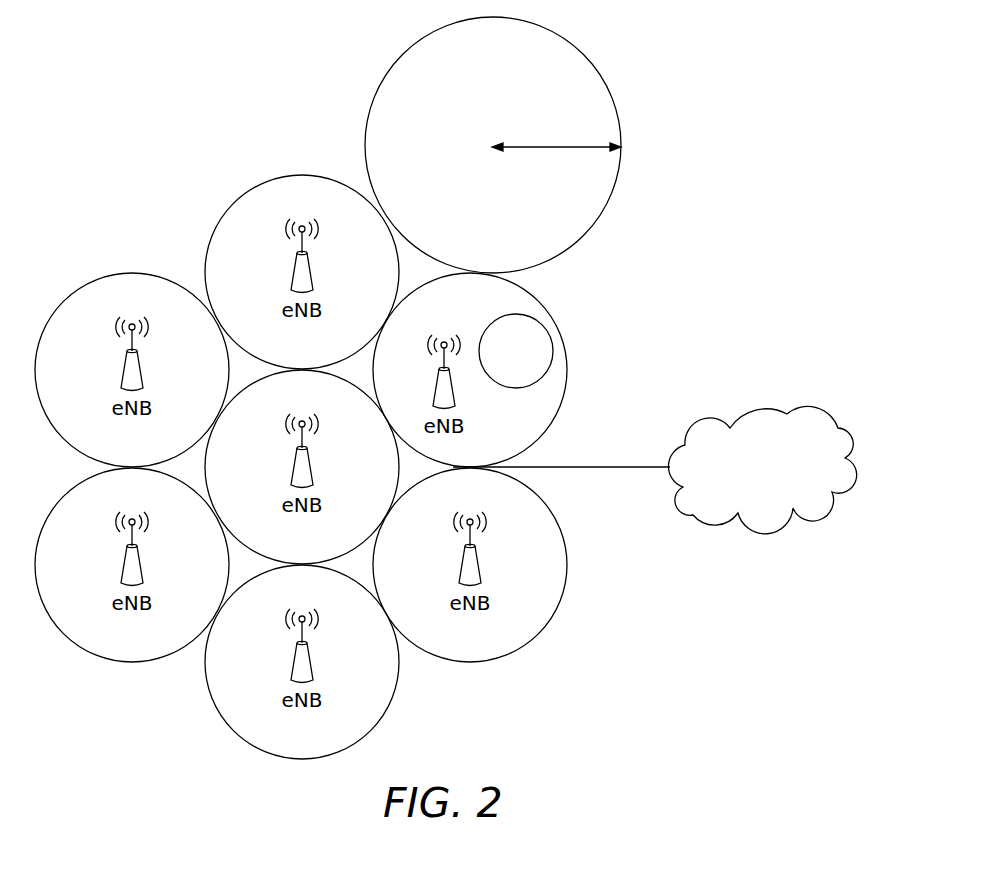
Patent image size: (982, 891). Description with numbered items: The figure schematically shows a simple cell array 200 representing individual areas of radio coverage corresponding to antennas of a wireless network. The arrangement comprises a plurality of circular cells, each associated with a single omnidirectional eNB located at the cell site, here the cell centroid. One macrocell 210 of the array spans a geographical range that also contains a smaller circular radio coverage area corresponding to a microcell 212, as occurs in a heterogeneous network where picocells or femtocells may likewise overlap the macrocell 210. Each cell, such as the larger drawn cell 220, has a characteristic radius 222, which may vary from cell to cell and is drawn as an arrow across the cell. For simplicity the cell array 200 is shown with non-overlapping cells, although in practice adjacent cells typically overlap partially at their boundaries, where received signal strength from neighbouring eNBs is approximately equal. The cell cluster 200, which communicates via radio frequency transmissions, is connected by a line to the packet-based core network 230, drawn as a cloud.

The cell array 200 is at (145, 127).
The macrocell 210 is at (567, 372).
The microcell 212 is at (547, 327).
The core network 220 is at (395, 63).
The radius 222 is at (521, 145).
The core network 230 is at (787, 408).